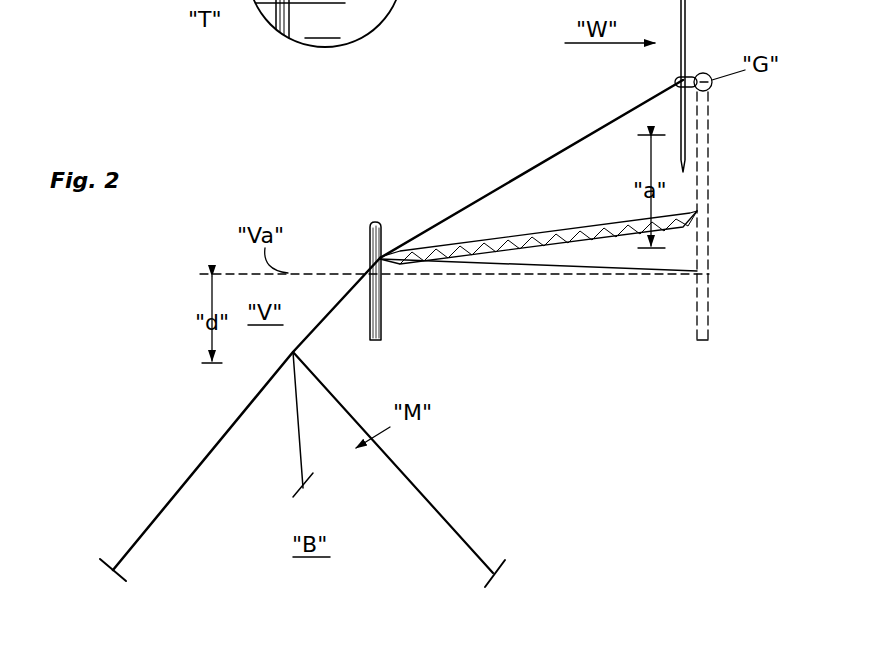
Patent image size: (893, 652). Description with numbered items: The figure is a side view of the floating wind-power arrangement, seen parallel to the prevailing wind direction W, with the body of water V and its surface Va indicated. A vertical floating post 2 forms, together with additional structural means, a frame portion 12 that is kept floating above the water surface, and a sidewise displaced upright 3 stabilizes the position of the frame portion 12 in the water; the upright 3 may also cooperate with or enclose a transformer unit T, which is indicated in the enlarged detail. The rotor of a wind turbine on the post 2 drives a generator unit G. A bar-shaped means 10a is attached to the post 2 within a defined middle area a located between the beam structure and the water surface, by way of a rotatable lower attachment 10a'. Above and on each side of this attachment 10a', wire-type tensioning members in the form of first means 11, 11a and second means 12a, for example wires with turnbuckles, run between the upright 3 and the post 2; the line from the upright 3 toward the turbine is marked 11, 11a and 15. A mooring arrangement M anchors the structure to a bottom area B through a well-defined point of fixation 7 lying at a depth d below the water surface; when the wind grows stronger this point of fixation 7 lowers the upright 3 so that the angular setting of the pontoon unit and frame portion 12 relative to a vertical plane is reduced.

The post 2 is at (703, 200).
The upright 3 is at (370, 233).
The point of fixation 7 is at (297, 351).
The bar-shaped means 10a is at (538, 224).
The rotatable lower attachment 10a' is at (585, 243).
The first means 11 is at (391, 330).
The first means 11a is at (391, 330).
The cable 15 is at (525, 175).
The frame portion 12 is at (717, 149).
The second means 12a is at (392, 8).